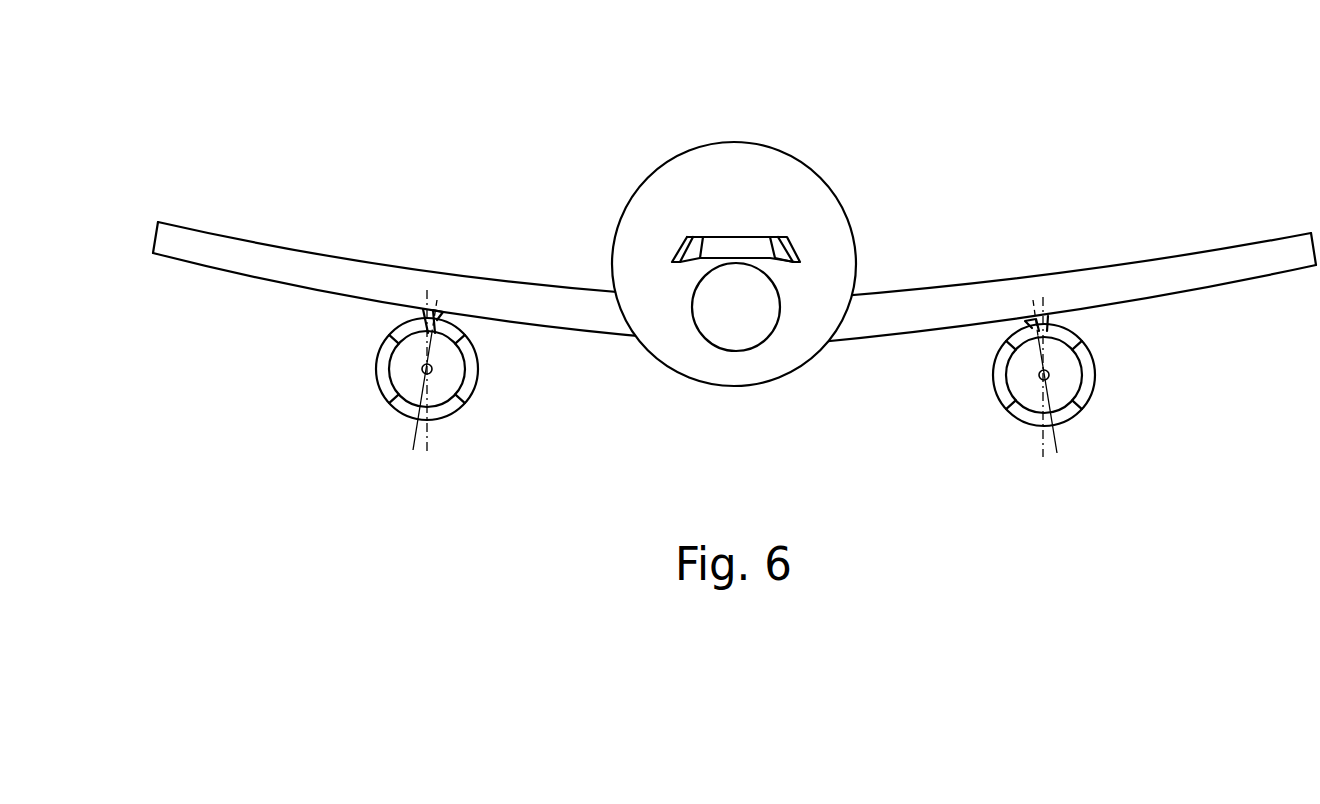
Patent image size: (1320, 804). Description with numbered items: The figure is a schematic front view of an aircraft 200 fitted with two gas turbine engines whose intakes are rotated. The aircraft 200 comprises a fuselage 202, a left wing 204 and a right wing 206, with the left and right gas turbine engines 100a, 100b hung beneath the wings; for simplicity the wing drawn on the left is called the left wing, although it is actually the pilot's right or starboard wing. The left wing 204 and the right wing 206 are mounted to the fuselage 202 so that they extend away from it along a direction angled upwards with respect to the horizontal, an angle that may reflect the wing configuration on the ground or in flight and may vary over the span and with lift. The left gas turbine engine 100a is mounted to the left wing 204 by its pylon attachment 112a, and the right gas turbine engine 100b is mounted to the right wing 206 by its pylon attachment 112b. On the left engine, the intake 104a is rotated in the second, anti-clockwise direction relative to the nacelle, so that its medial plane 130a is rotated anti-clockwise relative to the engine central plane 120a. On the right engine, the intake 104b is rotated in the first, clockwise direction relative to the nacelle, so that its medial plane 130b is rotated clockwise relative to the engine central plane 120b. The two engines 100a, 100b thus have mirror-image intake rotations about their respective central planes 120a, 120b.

The aircraft 200 is at (571, 98).
The fuselage 202 is at (794, 153).
The left wing 204 is at (273, 256).
The right wing 206 is at (1105, 283).
The left gas turbine engine 100a is at (371, 400).
The right gas turbine engine 100b is at (1103, 387).
The intake 104a is at (384, 342).
The intake 104b is at (1089, 346).
The pylon attachment 112a is at (445, 316).
The pylon attachment 112b is at (1024, 322).
The engine central plane 120a is at (440, 297).
The engine central plane 120b is at (1033, 312).
The medial plane 130a is at (432, 438).
The medial plane 130b is at (1040, 438).